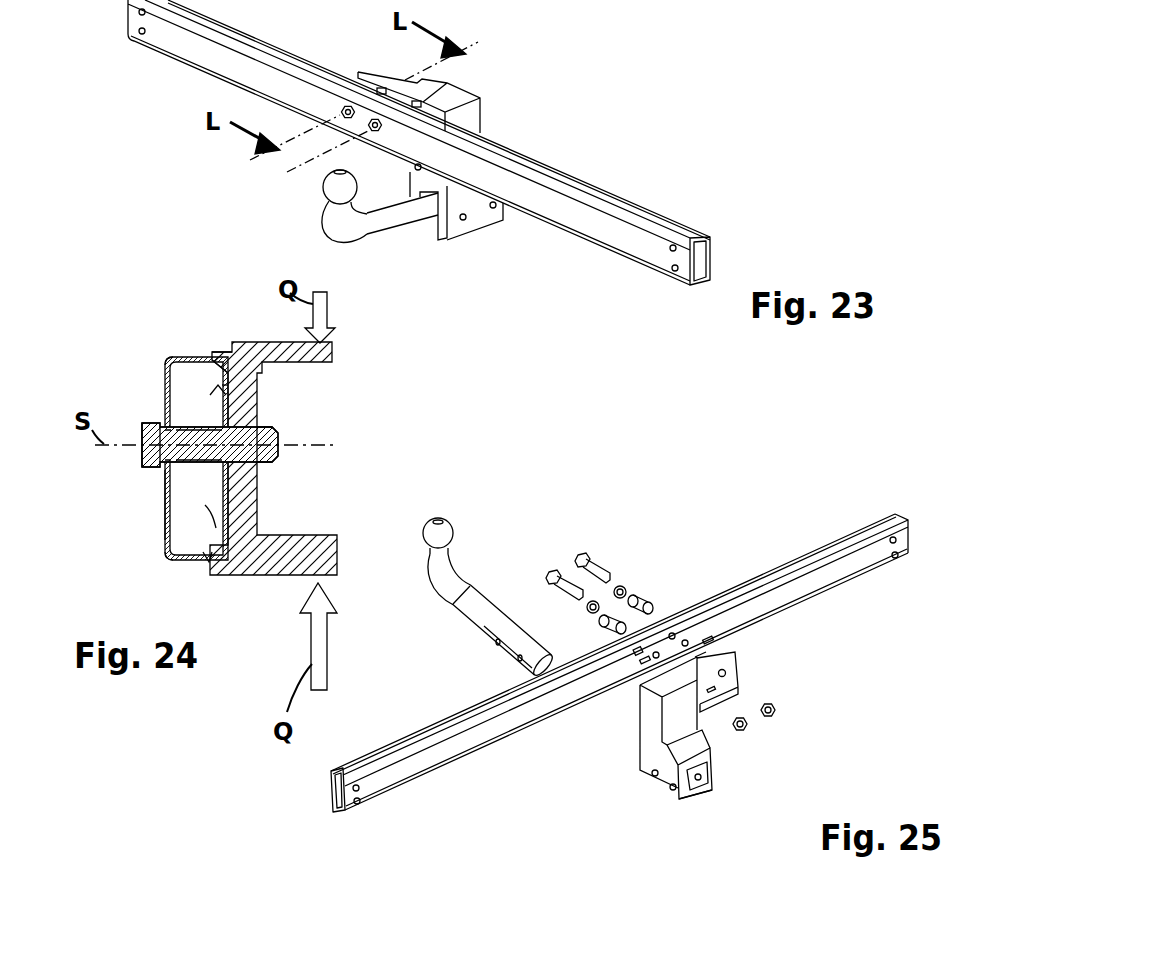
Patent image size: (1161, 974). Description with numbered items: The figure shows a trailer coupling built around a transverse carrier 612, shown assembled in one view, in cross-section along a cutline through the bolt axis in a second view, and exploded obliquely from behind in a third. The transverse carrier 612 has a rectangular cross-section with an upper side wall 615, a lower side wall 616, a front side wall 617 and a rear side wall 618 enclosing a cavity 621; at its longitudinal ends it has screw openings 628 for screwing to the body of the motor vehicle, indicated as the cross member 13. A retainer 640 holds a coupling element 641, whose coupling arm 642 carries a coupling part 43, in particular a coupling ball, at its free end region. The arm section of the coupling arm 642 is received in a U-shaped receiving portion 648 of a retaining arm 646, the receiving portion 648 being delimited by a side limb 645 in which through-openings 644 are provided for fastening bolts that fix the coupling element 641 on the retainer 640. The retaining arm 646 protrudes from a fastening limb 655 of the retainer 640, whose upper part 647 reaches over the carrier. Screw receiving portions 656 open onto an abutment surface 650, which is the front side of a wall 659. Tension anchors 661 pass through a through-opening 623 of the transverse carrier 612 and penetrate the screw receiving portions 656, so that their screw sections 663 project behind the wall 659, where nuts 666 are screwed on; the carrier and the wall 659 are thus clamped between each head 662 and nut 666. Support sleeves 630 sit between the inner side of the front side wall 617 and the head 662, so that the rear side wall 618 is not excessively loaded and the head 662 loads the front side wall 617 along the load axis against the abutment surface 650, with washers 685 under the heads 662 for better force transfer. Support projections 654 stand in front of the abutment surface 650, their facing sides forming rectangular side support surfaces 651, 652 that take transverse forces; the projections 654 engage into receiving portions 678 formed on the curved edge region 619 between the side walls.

In FIG. 23, the cross member 13 is at (712, 253).
In FIG. 23, the coupling part 43 is at (330, 192).
In FIG. 23, the transverse carrier 612 is at (590, 232).
In FIG. 25, the transverse carrier 612 is at (820, 593).
In FIG. 24, the upper side wall 615 is at (185, 357).
In FIG. 24, the lower side wall 616 is at (193, 558).
In FIG. 24, the front side wall 617 is at (207, 507).
In FIG. 24, the rear side wall 618 is at (167, 505).
In FIG. 23, the edge region 619 is at (700, 237).
In FIG. 24, the cavity 621 is at (170, 356).
In FIG. 25, the through-opening 623 is at (673, 634).
In FIG. 23, the screw openings 628 is at (140, 31).
In FIG. 24, the support sleeve 630 is at (192, 420).
In FIG. 25, the support sleeve 630 is at (630, 606).
In FIG. 23, the retainer 640 is at (461, 133).
In FIG. 25, the coupling element 641 is at (470, 635).
In FIG. 23, the coupling arm 642 is at (396, 245).
In FIG. 23, the through-openings 644 is at (494, 208).
In FIG. 25, the through-openings 644 is at (673, 789).
In FIG. 25, the side limb 645 is at (713, 793).
In FIG. 25, the retaining arm 646 is at (695, 756).
In FIG. 23, the bracket top portion 647 is at (482, 122).
In FIG. 25, the receiving portion 648 is at (697, 795).
In FIG. 24, the abutment surface 650 is at (222, 403).
In FIG. 24, the side support surface 651 is at (207, 578).
In FIG. 24, the side support surface 652 is at (206, 378).
In FIG. 23, the support projection 654 is at (412, 100).
In FIG. 24, the support projection 654 is at (224, 348).
In FIG. 25, the support projection 654 is at (698, 658).
In FIG. 25, the fastening limb 655 is at (737, 652).
In FIG. 25, the screw receiving portion 656 is at (725, 675).
In FIG. 24, the wall 659 is at (258, 493).
In FIG. 24, the tension anchor 661 is at (145, 428).
In FIG. 25, the tension anchor 661 is at (580, 560).
In FIG. 23, the head 662 is at (375, 132).
In FIG. 24, the head 662 is at (158, 470).
In FIG. 24, the screw section 663 is at (273, 457).
In FIG. 24, the nut 666 is at (260, 426).
In FIG. 25, the nut 666 is at (769, 717).
In FIG. 25, the receiving portion 678 is at (657, 652).
In FIG. 24, the washer 685 is at (160, 483).
In FIG. 25, the washer 685 is at (614, 593).